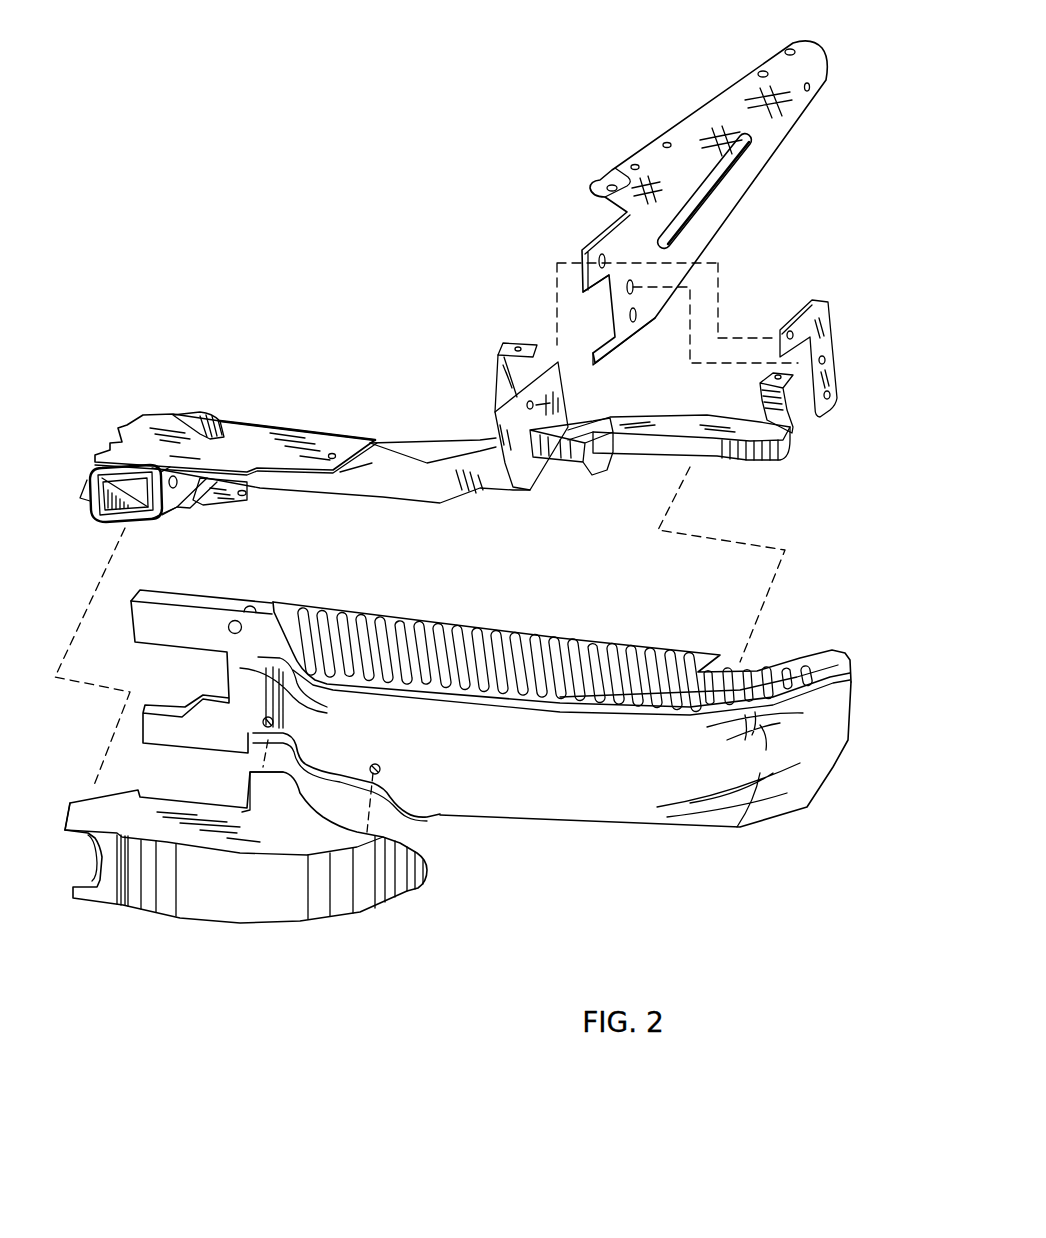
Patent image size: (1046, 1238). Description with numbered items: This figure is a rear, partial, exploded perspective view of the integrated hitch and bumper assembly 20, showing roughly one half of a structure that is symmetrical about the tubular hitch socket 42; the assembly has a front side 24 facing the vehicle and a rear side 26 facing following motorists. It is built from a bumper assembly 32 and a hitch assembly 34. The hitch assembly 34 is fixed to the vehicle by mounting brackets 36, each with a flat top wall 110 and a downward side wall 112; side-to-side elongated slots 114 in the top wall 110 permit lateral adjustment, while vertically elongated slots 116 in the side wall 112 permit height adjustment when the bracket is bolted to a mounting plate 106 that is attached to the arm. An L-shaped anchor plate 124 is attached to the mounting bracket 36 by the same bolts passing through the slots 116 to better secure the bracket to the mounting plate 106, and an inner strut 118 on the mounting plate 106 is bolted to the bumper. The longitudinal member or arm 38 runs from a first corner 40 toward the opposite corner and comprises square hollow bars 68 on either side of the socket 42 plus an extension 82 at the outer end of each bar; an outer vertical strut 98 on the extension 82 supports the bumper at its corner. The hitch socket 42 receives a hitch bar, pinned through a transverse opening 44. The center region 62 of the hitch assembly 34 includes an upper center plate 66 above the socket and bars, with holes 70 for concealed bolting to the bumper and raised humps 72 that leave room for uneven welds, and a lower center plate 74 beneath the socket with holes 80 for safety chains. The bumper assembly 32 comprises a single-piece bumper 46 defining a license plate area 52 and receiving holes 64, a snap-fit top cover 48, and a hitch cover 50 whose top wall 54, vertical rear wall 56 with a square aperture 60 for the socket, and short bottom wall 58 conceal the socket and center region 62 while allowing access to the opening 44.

The integrated hitch and bumper assembly 20 is at (288, 150).
The front side 24 is at (472, 102).
The rear side 26 is at (450, 930).
The bumper assembly 32 is at (848, 633).
The hitch assembly 34 is at (843, 288).
The mounting bracket 36 is at (716, 85).
The longitudinal member or arm 38 is at (397, 428).
The first corner 40 is at (790, 918).
The tubular hitch socket 42 is at (121, 447).
The transverse opening 44 is at (178, 489).
The bumper 46 is at (580, 792).
The top cover 48 is at (540, 630).
The hitch cover 50 is at (285, 920).
The license plate area 52 is at (186, 660).
The top wall 54 is at (246, 792).
The vertical rear wall 56 is at (211, 903).
The bottom wall 58 is at (92, 880).
The square aperture 60 is at (55, 835).
The center region 62 is at (167, 365).
The receiving holes 64 is at (380, 769).
The upper center plate 66 is at (290, 430).
The bars 68 is at (387, 500).
The holes 70 is at (334, 450).
The raised humps 72 is at (207, 437).
The lower center plate 74 is at (184, 510).
The holes 80 is at (256, 506).
The extension 82 is at (657, 453).
The outer vertical strut 98 is at (760, 400).
The mounting plate 106 is at (497, 380).
The top wall 110 is at (689, 120).
The side wall 112 is at (782, 118).
The side-to-side elongated slots 114 is at (790, 47).
The vertically elongated slots 116 is at (637, 320).
The inner strut 118 is at (513, 342).
The L-shaped anchor plate 124 is at (825, 300).